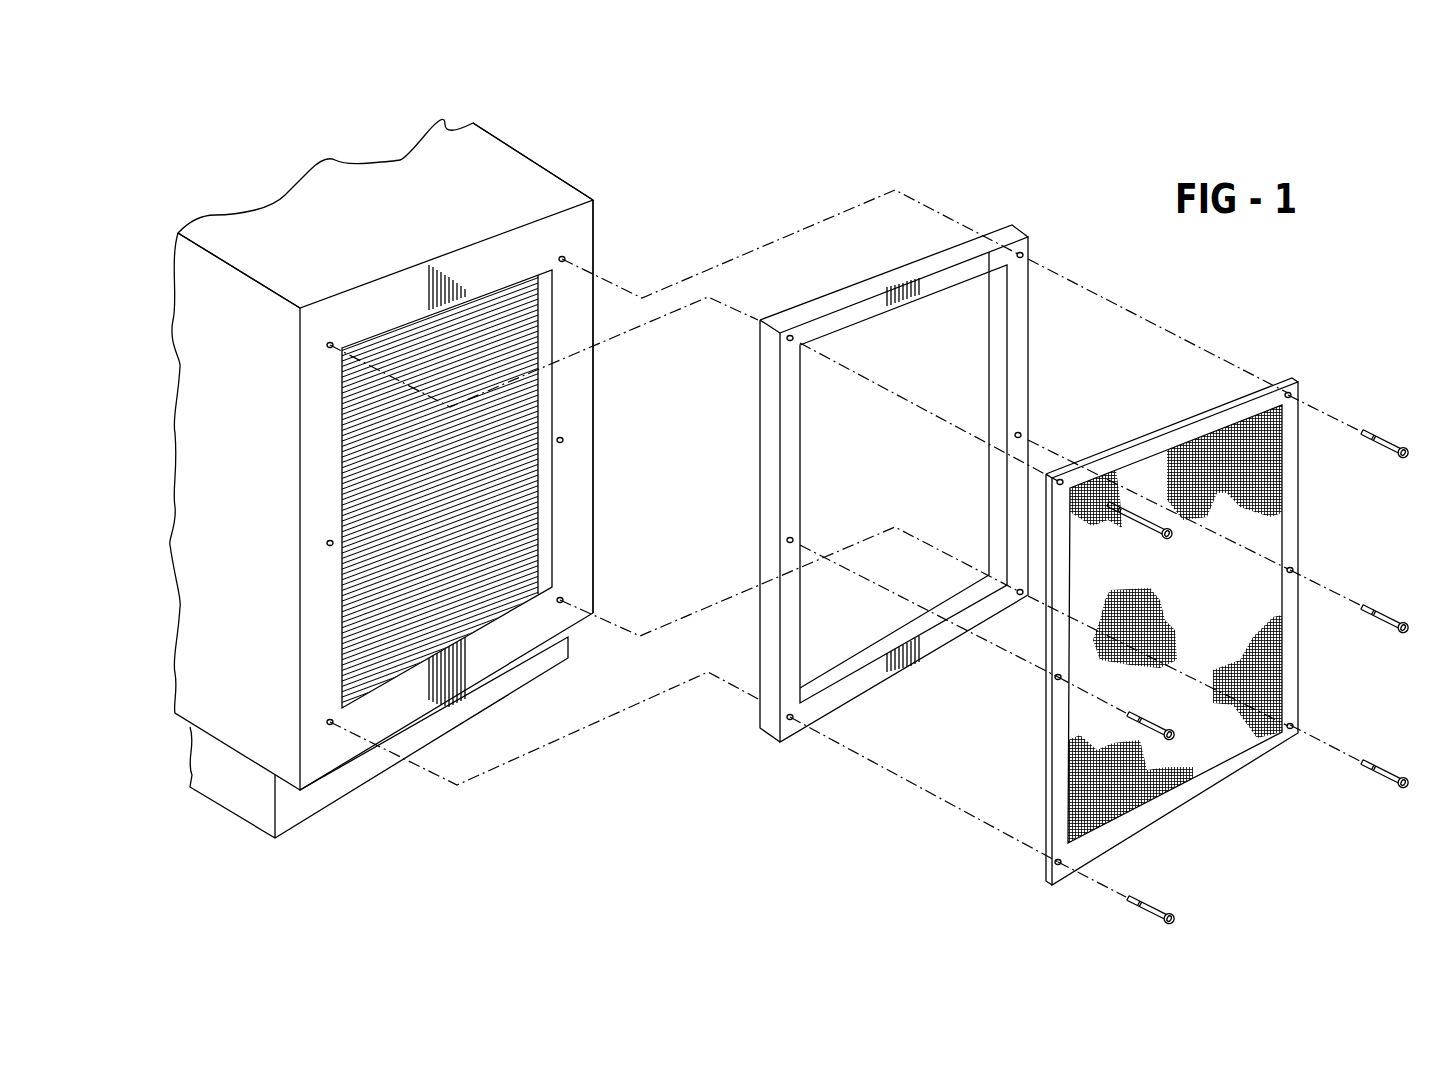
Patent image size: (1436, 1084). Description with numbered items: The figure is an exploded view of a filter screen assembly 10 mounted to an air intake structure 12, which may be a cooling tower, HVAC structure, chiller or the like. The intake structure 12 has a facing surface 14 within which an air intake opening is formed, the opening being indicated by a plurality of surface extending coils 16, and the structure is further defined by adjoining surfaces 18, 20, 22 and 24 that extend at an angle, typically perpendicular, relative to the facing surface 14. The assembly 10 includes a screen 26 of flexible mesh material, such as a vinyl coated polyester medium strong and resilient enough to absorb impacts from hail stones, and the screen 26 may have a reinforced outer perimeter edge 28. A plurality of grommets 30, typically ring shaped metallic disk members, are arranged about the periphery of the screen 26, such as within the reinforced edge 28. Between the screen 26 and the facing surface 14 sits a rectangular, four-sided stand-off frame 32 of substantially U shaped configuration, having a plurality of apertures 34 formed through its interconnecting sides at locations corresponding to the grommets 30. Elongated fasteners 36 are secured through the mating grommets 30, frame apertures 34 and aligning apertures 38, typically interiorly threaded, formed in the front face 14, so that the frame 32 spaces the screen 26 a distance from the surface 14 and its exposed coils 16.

The filter screen assembly 10 is at (672, 176).
The air intake structure 12 is at (357, 176).
The facing surface 14 is at (577, 233).
The surface extending coils 16 is at (527, 477).
The adjoining surface 18 is at (527, 182).
The adjoining surface 20 is at (597, 553).
The adjoining surface 22 is at (485, 683).
The adjoining surface 24 is at (197, 509).
The screen 26 is at (1202, 470).
The reinforced outer perimeter edge 28 is at (1125, 457).
The grommets 30 is at (1060, 481).
The stand-off frame 32 is at (953, 258).
The apertures 34 is at (1022, 255).
The elongated fasteners 36 is at (1172, 540).
The aligning apertures 38 is at (328, 545).